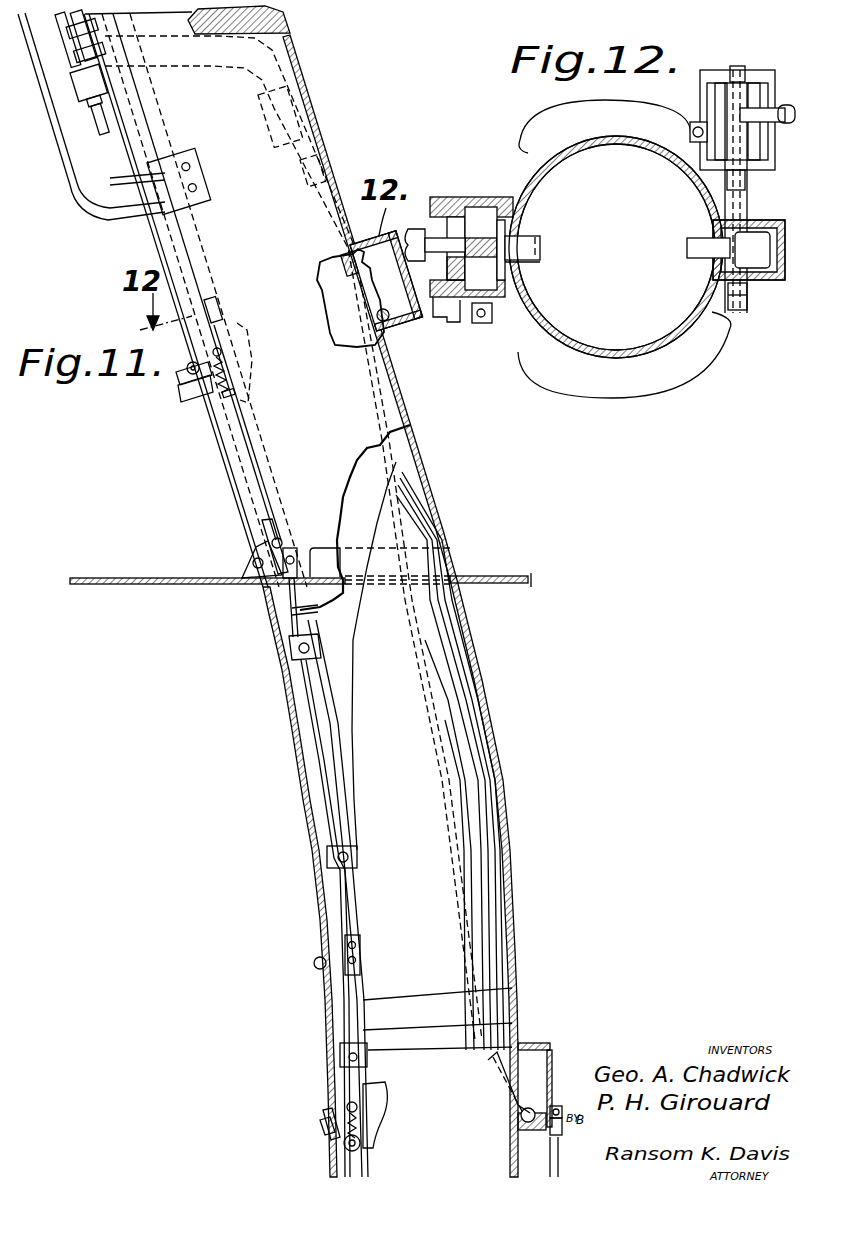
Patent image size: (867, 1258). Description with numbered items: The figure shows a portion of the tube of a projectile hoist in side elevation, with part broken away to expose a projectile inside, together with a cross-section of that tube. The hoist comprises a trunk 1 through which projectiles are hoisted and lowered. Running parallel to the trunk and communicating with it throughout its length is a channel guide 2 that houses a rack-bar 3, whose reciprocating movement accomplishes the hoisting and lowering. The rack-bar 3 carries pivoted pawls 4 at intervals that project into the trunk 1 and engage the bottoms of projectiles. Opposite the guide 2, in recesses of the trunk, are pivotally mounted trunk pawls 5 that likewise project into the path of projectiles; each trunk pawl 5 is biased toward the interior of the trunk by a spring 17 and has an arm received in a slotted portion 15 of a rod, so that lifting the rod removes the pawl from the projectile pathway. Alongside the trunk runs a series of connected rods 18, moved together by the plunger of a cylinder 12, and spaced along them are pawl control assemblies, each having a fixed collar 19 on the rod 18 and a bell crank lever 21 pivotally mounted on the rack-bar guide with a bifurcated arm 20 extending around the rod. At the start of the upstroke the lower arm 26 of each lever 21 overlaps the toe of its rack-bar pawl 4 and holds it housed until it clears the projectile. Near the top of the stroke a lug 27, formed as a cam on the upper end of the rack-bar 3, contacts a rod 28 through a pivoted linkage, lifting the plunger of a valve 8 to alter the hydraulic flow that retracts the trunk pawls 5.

In FIG. 11, the trunk 1 is at (482, 683).
In FIG. 12, the trunk 1 is at (637, 345).
In FIG. 12, the channel guide 2 is at (500, 204).
In FIG. 11, the rack-bar 3 is at (302, 724).
In FIG. 12, the rack-bar 3 is at (512, 265).
In FIG. 11, the pivoted pawl 4 is at (380, 1113).
In FIG. 12, the pivoted pawl 4 is at (531, 240).
In FIG. 11, the trunk pawl 5 is at (488, 1070).
In FIG. 12, the trunk pawl 5 is at (700, 240).
In FIG. 11, the valve 8 is at (64, 60).
In FIG. 11, the cylinder 12 is at (135, 205).
In FIG. 11, the slotted portion 15 is at (338, 335).
In FIG. 11, the spring 17 is at (409, 323).
In FIG. 12, the spring 17 is at (760, 272).
In FIG. 11, the rod 18 is at (252, 478).
In FIG. 12, the rod 18 is at (482, 313).
In FIG. 11, the fixed collar 19 is at (218, 334).
In FIG. 11, the bifurcated arm 20 is at (346, 1106).
In FIG. 11, the bell crank lever 21 is at (182, 376).
In FIG. 11, the lower arm 26 is at (326, 1128).
In FIG. 11, the lug 27 is at (330, 906).
In FIG. 11, the rod 28 is at (96, 122).